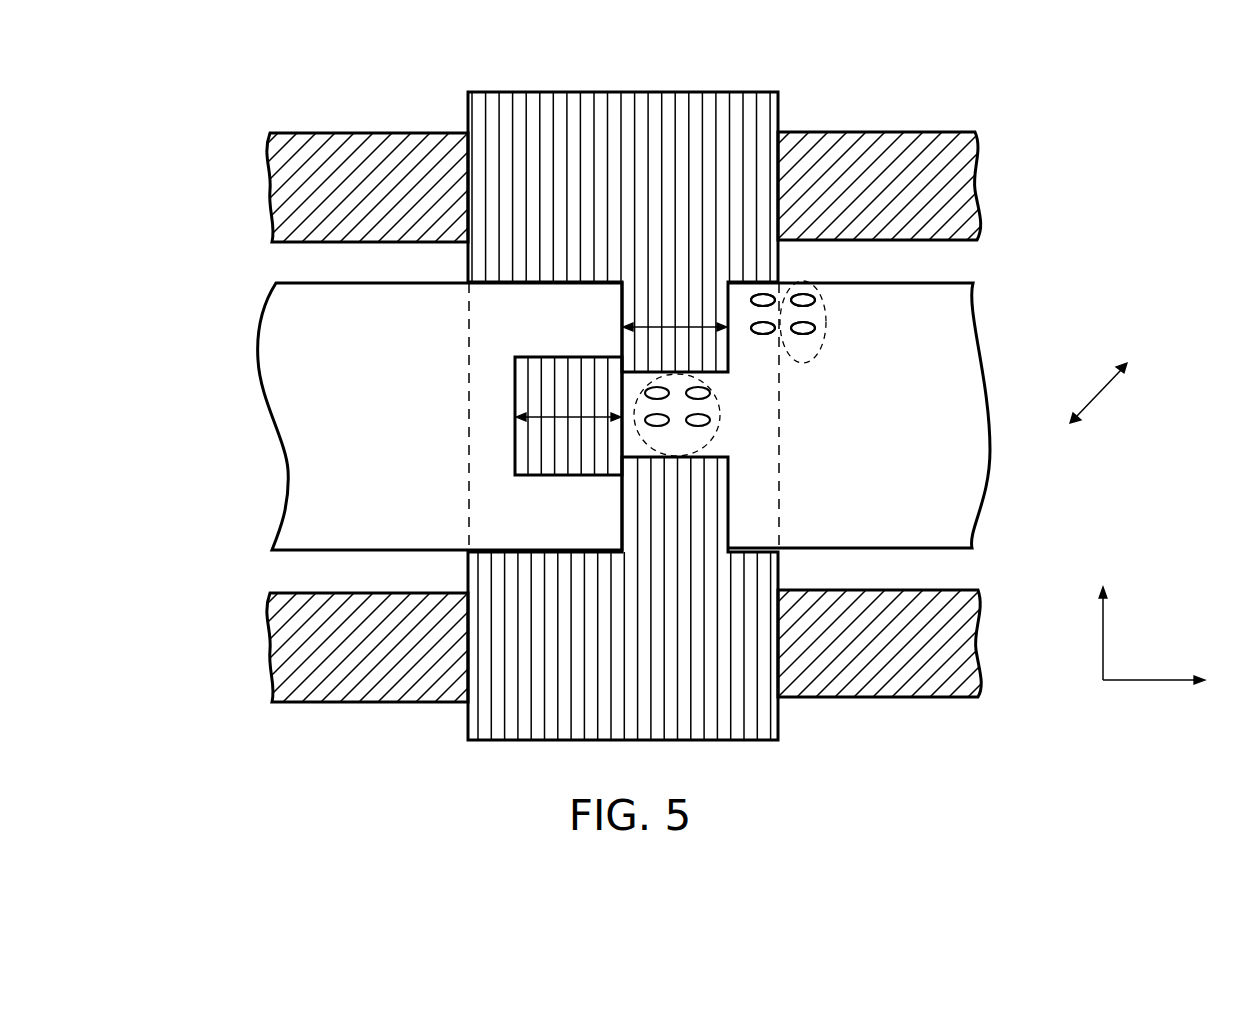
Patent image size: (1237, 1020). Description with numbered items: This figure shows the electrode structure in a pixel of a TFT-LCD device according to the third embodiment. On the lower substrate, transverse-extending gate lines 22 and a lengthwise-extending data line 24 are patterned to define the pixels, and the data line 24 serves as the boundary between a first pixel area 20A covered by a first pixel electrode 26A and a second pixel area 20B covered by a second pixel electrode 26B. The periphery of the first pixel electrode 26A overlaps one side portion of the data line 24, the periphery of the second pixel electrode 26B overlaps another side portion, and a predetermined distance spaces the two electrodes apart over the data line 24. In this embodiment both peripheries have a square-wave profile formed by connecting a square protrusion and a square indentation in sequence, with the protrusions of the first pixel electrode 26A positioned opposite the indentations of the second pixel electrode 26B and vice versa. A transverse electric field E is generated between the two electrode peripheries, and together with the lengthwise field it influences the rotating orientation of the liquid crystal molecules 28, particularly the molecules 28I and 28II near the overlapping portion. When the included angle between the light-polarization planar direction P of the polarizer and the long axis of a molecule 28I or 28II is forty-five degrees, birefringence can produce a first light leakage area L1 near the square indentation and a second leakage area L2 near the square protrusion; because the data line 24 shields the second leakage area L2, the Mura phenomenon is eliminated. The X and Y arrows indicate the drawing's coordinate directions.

The first pixel area 20A is at (985, 278).
The second pixel area 20B is at (259, 281).
The gate line 22 is at (866, 145).
The data line 24 is at (637, 110).
The first pixel electrode 26A is at (957, 393).
The second pixel electrode 26B is at (372, 397).
The liquid crystal molecules 28 is at (848, 300).
The liquid crystal molecule 28I is at (765, 296).
The liquid crystal molecule 28II is at (808, 298).
The first light leakage area L1 is at (803, 365).
The second leakage area L2 is at (718, 440).
The transverse electric field E is at (621, 357).
The light-polarization planar direction P is at (1096, 390).
The X axis X is at (1167, 676).
The Y axis Y is at (1102, 615).